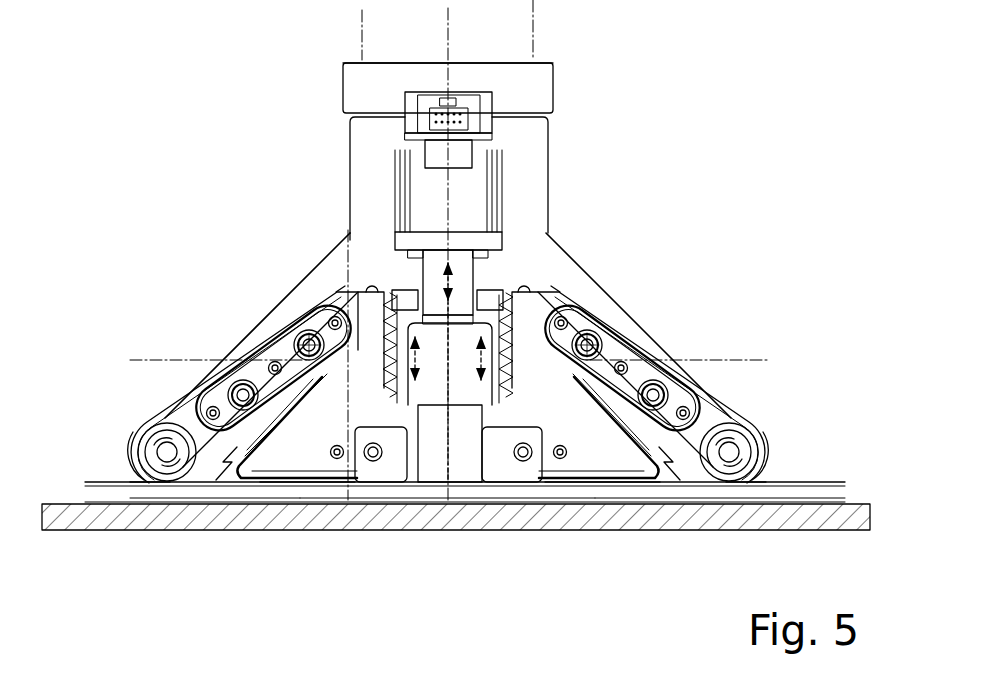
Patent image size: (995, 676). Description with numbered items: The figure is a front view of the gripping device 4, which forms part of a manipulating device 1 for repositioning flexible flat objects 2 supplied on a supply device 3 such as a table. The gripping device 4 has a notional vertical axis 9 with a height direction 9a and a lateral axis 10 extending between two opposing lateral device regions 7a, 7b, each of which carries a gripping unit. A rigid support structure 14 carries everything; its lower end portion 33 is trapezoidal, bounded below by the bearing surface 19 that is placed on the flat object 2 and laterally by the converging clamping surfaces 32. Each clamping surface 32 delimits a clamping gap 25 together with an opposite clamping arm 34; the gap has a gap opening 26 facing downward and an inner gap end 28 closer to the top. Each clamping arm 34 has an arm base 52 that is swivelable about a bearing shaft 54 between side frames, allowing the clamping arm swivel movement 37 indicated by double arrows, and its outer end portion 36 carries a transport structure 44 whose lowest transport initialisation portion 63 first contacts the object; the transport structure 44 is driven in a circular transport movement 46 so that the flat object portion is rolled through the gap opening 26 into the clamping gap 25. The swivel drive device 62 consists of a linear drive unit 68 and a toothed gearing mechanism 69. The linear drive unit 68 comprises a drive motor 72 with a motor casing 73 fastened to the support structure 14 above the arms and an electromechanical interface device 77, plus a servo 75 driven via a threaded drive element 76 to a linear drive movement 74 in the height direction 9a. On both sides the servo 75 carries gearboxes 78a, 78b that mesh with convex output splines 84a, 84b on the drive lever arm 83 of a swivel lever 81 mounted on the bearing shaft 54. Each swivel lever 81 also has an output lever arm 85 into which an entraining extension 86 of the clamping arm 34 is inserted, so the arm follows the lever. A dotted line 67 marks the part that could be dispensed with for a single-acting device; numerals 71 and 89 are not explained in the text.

The manipulating device 1 is at (713, 112).
The flat object 2 is at (300, 497).
The supply device 3 is at (856, 520).
The gripping device 4 is at (572, 118).
The first lateral device region 7a is at (208, 305).
The second lateral device region 7b is at (690, 262).
The vertical axis 9 is at (505, 12).
The height direction 9a is at (448, 35).
The lateral axis 10 is at (714, 362).
The support structure 14 is at (540, 224).
The bearing surface 19 is at (604, 490).
The clamping gap 25 is at (222, 408).
The gap opening 26 is at (208, 466).
The inner gap end 28 is at (292, 348).
The clamping surface 32 is at (255, 382).
The end portion 33 is at (337, 462).
The clamping arm 34 is at (176, 420).
The outer end portion 36 is at (126, 438).
The clamping arm swivel movement 37 is at (140, 398).
The transport structure 44 is at (240, 470).
The transport movement 46 is at (131, 482).
The arm base 52 is at (172, 462).
The bearing shaft 54 is at (305, 338).
The swivel drive device 62 is at (396, 432).
The transport initialisation portion 63 is at (182, 472).
The dotted line 67 is at (350, 228).
The linear drive unit 68 is at (420, 165).
The toothed gearing mechanism 69 is at (374, 425).
The centre column 71 is at (463, 410).
The drive motor 72 is at (480, 206).
The motor casing 73 is at (475, 160).
The linear drive movement 74 is at (480, 330).
The servo 75 is at (497, 290).
The drive element 76 is at (408, 300).
The electromechanical interface device 77 is at (437, 98).
The first gearbox 78a is at (412, 400).
The second gearbox 78b is at (478, 400).
The swivel lever 81 is at (332, 315).
The drive lever arm 83 is at (356, 300).
The first output spline 84a is at (298, 494).
The second output spline 84b is at (562, 395).
The output lever arm 85 is at (178, 430).
The entraining extension 86 is at (258, 472).
The bearing plate 89 is at (688, 395).